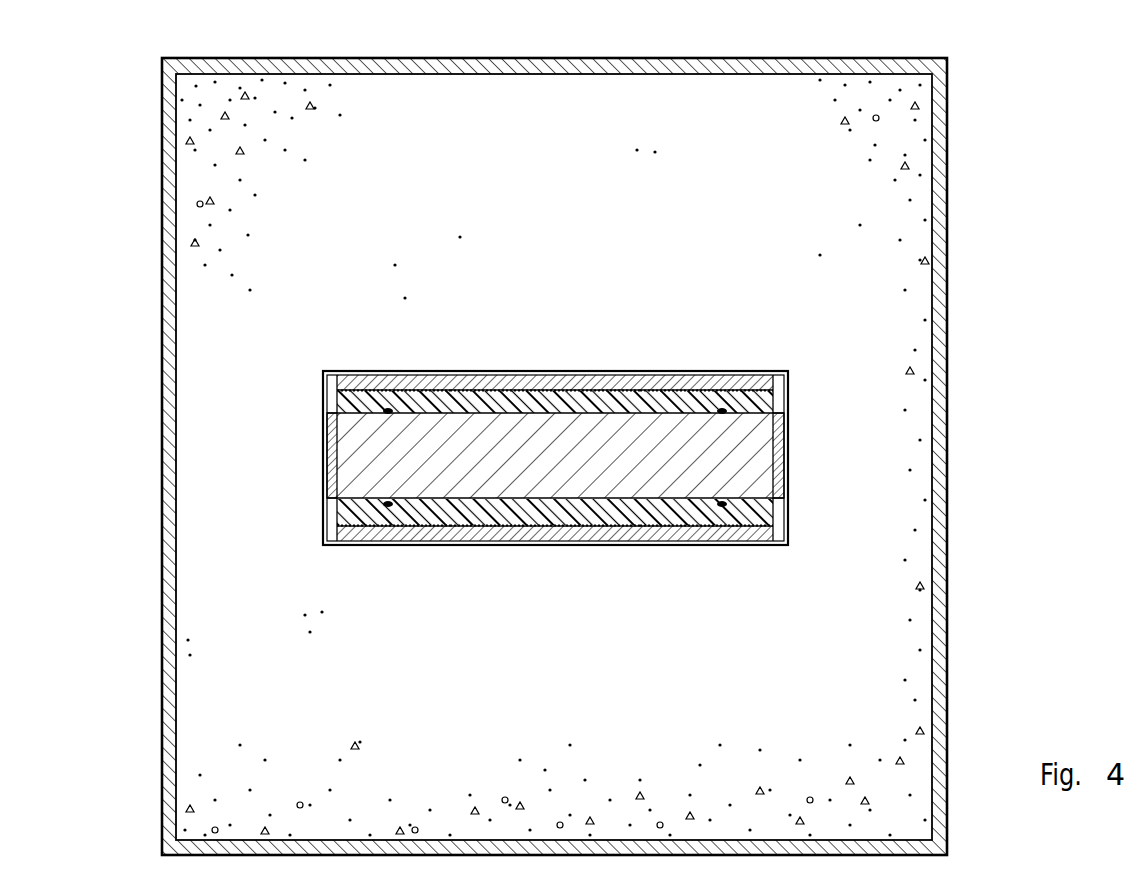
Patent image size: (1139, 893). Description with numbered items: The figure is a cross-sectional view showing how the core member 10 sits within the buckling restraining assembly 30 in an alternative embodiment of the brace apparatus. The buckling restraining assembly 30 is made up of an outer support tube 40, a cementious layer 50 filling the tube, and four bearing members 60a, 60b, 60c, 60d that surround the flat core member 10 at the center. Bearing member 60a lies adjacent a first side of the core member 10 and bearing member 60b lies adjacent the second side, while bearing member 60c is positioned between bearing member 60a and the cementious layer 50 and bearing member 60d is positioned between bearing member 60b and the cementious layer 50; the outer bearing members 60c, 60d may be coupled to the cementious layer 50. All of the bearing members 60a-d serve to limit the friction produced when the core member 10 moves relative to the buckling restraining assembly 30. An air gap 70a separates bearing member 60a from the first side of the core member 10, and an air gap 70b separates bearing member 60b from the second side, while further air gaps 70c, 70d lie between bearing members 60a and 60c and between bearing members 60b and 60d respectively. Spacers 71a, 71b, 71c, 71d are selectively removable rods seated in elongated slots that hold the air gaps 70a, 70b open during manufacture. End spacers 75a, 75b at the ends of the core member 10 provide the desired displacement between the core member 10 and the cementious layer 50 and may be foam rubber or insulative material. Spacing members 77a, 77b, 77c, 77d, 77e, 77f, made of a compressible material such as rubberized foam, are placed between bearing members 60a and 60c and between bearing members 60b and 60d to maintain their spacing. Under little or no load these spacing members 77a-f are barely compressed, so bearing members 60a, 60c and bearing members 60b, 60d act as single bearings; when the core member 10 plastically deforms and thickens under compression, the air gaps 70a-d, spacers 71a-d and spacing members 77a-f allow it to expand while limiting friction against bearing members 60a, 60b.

The core member 10 is at (660, 430).
The buckling restraining assembly 30 is at (615, 436).
The support tube 40 is at (292, 57).
The cementious layer 50 is at (207, 222).
The bearing member 60a is at (480, 385).
The bearing member 60b is at (468, 533).
The bearing member 60c is at (505, 403).
The bearing member 60d is at (492, 512).
The air gap 70a is at (616, 403).
The air gap 70b is at (631, 513).
The air gap 70c is at (456, 403).
The air gap 70d is at (449, 512).
The spacer 71a is at (388, 410).
The spacer 71b is at (723, 410).
The spacer 71c is at (388, 507).
The spacer 71d is at (720, 507).
The end spacer 75a is at (327, 450).
The end spacer 75b is at (786, 458).
The spacing member 77a is at (364, 391).
The spacing member 77b is at (544, 391).
The spacing member 77c is at (742, 392).
The spacing member 77d is at (369, 527).
The spacing member 77e is at (547, 527).
The spacing member 77f is at (738, 527).